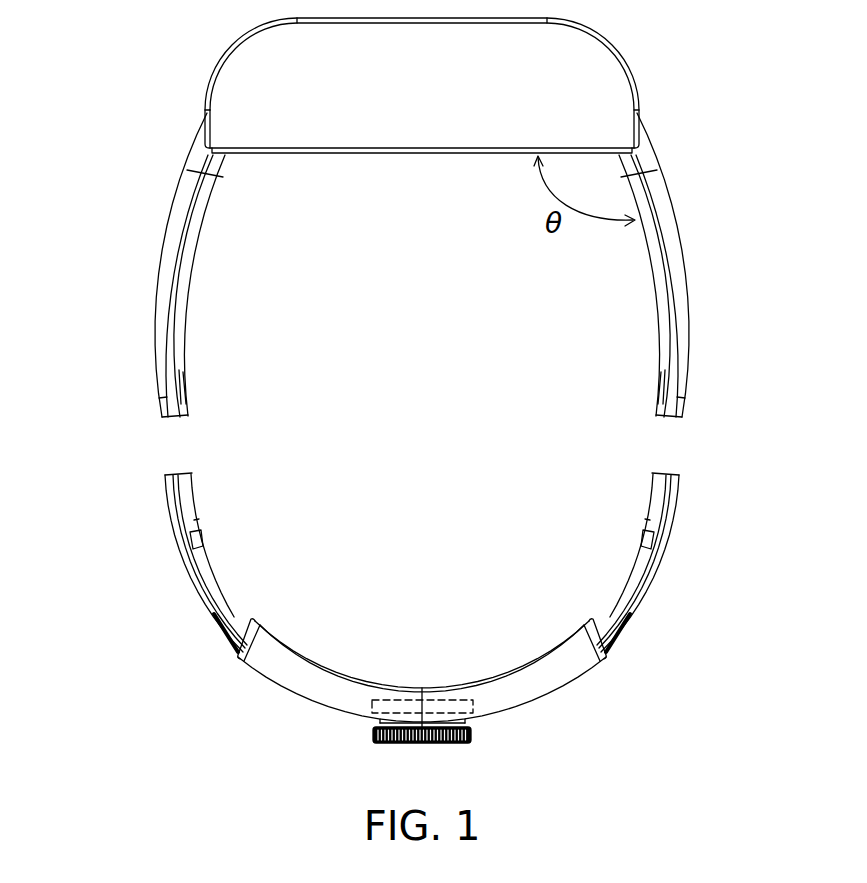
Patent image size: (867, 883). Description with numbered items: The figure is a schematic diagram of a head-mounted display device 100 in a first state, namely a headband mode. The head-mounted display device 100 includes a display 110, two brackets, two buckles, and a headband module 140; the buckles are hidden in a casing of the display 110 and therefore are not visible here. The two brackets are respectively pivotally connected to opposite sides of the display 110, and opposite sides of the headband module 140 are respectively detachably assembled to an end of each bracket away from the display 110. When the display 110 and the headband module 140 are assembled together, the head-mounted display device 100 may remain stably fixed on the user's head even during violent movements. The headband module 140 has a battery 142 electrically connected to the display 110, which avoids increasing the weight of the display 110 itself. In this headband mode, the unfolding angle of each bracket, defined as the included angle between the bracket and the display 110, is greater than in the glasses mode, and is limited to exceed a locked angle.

The head-mounted display device 100 is at (753, 734).
The display 110 is at (588, 58).
The headband module 140 is at (560, 672).
The battery 142 is at (474, 704).